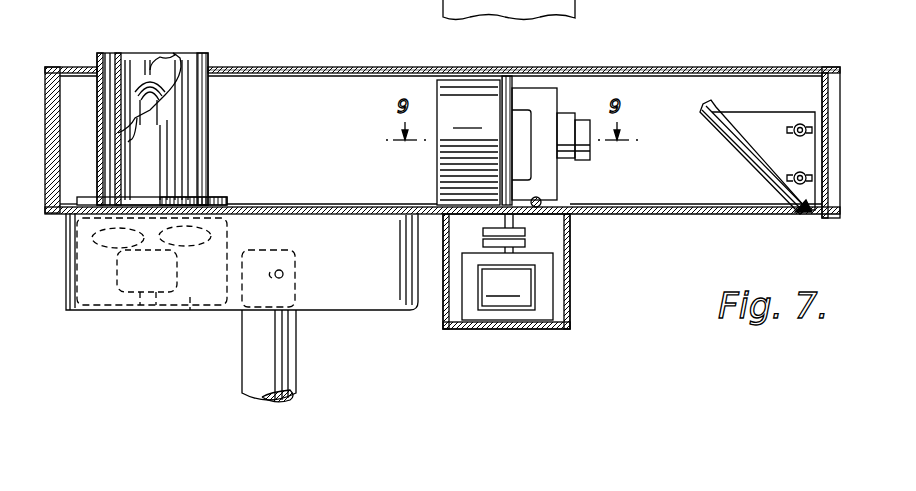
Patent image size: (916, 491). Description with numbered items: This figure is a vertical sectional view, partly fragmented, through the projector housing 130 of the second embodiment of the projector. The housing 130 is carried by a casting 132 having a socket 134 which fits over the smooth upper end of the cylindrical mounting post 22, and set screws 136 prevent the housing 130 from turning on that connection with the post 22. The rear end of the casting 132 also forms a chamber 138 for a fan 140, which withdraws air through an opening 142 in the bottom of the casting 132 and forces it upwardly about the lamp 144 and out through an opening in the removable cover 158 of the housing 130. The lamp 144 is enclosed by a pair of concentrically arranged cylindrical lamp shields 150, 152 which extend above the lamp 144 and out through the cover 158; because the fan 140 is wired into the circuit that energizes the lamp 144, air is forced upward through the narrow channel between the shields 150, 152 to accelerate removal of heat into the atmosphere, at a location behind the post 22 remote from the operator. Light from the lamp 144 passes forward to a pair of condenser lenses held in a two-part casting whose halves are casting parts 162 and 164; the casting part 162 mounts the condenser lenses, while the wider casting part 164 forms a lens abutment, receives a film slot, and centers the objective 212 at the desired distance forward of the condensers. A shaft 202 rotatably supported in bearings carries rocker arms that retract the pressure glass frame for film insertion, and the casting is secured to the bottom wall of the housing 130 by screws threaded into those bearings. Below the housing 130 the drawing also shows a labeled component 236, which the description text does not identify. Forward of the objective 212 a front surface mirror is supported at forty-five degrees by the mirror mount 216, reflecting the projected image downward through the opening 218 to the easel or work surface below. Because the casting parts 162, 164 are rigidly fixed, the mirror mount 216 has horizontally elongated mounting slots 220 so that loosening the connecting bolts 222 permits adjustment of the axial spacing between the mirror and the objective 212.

The projector housing 130 is at (690, 68).
The removable cover 158 is at (250, 67).
The opening 218 is at (722, 213).
The inner lamp shield 150 is at (128, 55).
The outer lamp shield 152 is at (97, 62).
The lamp 144 is at (148, 106).
The casting 132 is at (372, 300).
The chamber 138 is at (95, 278).
The fan 140 is at (70, 246).
The opening 142 is at (150, 305).
The socket 134 is at (230, 303).
The set screws 136 is at (282, 272).
The mounting post 22 is at (243, 372).
The casting part 162 is at (468, 142).
The casting part 164 is at (540, 88).
The objective 212 is at (568, 118).
The shaft 202 is at (543, 200).
The controller 236 is at (506, 271).
The mirror mount 216 is at (735, 138).
The mounting slots 220 is at (812, 180).
The connecting bolts 222 is at (806, 124).